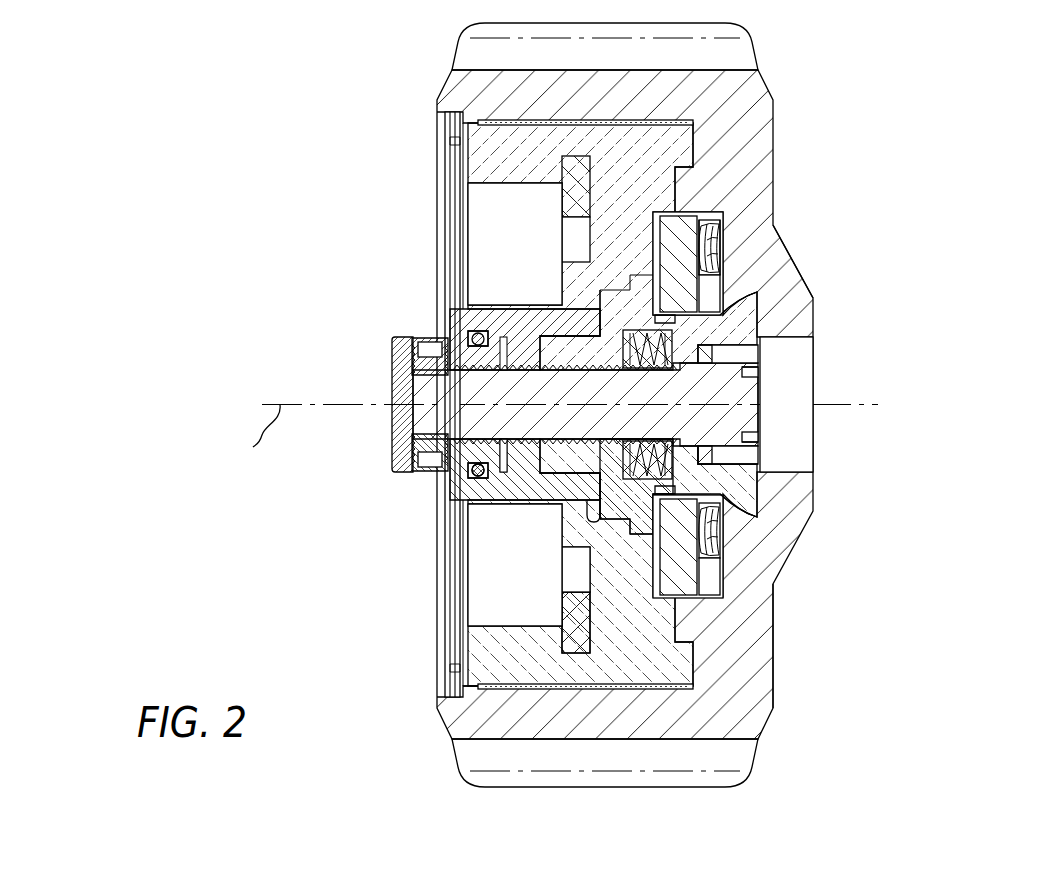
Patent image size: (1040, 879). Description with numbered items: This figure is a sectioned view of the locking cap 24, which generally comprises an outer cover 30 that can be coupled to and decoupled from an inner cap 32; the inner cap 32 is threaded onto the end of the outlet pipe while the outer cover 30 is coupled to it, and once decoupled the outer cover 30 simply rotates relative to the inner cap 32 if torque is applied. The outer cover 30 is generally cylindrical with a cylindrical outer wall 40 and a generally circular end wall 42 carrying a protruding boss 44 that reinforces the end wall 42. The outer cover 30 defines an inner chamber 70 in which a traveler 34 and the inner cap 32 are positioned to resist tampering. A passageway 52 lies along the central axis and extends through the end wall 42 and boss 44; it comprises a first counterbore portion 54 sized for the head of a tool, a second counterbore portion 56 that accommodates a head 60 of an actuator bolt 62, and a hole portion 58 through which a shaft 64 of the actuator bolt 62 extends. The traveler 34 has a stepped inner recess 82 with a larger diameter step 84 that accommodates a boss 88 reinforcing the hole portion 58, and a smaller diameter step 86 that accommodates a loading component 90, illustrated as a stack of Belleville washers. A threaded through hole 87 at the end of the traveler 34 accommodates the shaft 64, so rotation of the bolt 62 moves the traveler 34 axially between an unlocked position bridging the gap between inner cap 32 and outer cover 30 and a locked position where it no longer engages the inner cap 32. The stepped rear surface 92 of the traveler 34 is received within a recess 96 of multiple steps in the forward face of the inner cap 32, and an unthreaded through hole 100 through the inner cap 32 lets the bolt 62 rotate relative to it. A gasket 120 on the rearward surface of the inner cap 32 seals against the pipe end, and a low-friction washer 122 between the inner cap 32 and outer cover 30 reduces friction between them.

The cap 24 is at (633, 429).
The outer cover 30 is at (727, 90).
The inner cap 32 is at (492, 163).
The traveler 34 is at (690, 550).
The outer wall 40 is at (517, 787).
The end wall 42 is at (776, 642).
The boss 44 is at (797, 263).
The passageway 52 is at (783, 392).
The first counterbore portion 54 is at (772, 337).
The second counterbore portion 56 is at (733, 467).
The hole portion 58 is at (755, 291).
The head 60 is at (742, 420).
The actuator bolt 62 is at (773, 412).
The shaft 64 is at (455, 390).
The inner chamber 70 is at (508, 223).
The stepped inner recess 82 is at (662, 491).
The larger diameter step 84 is at (628, 290).
The smaller diameter step 86 is at (512, 333).
The through hole 87 is at (458, 481).
The boss 88 is at (686, 327).
The loading component 90 is at (548, 300).
The stepped rear surface 92 is at (582, 526).
The recess 96 is at (597, 488).
The through hole 100 is at (466, 338).
The gasket 120 is at (573, 648).
The washer 122 is at (697, 660).